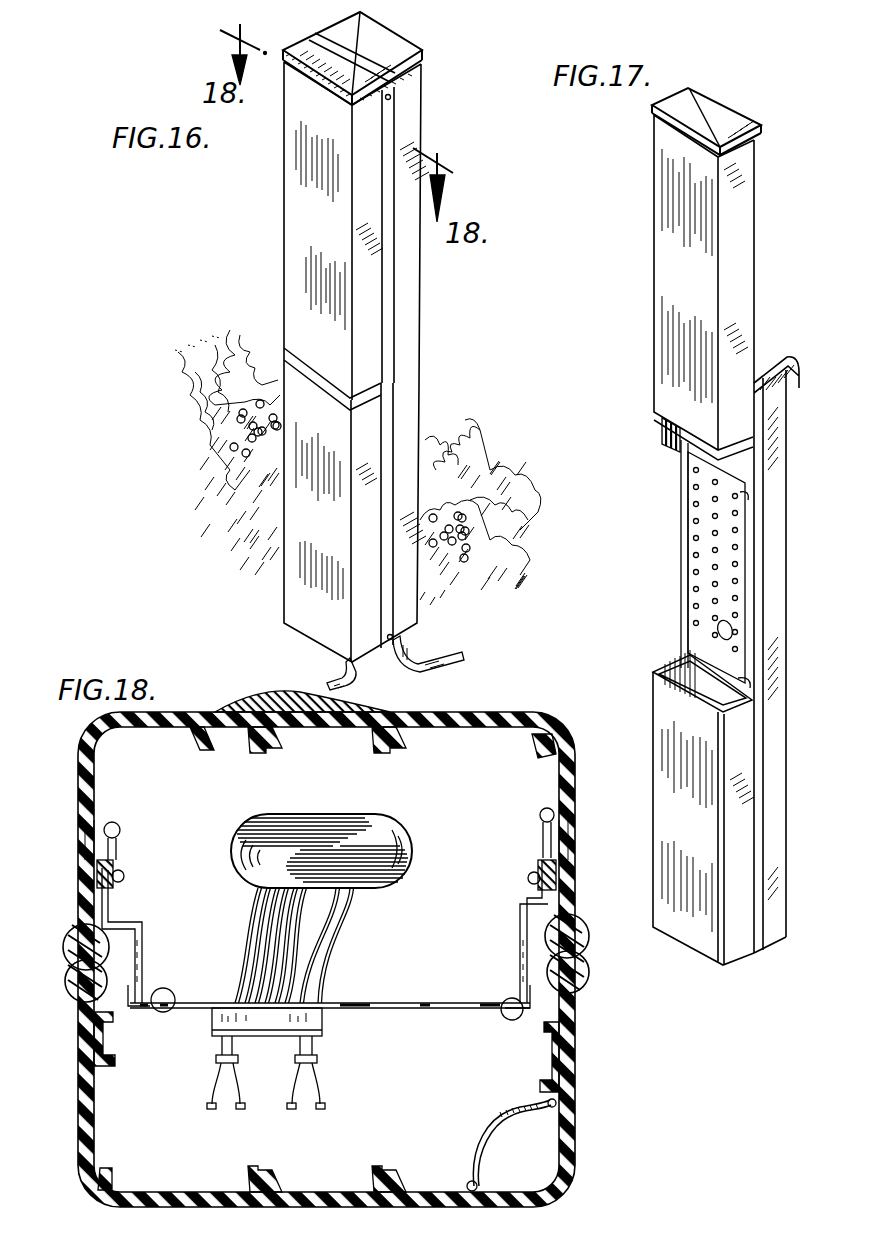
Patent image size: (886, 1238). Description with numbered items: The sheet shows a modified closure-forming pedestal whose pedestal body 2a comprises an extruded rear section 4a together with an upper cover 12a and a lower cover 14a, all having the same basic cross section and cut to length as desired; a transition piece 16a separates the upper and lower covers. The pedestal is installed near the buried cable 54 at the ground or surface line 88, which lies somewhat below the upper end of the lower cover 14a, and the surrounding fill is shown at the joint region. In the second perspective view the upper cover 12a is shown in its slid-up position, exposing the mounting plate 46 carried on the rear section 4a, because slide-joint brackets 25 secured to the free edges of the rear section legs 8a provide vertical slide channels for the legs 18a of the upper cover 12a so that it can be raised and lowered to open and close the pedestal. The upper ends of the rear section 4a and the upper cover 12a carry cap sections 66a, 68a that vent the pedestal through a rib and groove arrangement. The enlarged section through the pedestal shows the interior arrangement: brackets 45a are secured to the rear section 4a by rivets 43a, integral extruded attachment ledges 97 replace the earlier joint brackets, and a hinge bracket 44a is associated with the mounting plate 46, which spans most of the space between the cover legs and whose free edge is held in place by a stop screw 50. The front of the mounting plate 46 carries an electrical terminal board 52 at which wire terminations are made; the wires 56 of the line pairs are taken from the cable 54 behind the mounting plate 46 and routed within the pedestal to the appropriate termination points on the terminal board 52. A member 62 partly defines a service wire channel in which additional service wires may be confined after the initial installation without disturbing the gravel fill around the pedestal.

In FIG. 16, the pedestal body 2a is at (426, 312).
In FIG. 17, the rear section 4a is at (790, 378).
In FIG. 18, the rear section 4a is at (575, 1138).
In FIG. 18, the rear section legs 8a is at (80, 848).
In FIG. 16, the upper cover 12a is at (297, 257).
In FIG. 17, the upper cover 12a is at (740, 194).
In FIG. 16, the lower cover 14a is at (282, 597).
In FIG. 17, the lower cover 14a is at (735, 962).
In FIG. 16, the transition piece 16a is at (286, 360).
In FIG. 17, the transition piece 16a is at (663, 413).
In FIG. 18, the legs of the upper cover 18a is at (80, 1100).
In FIG. 18, the slide-joint brackets 25 is at (68, 962).
In FIG. 18, the rivets 43a is at (120, 880).
In FIG. 18, the hinge bracket 44a is at (517, 905).
In FIG. 18, the brackets 45a is at (142, 921).
In FIG. 17, the mounting plate 46 is at (688, 545).
In FIG. 18, the mounting plate 46 is at (407, 1010).
In FIG. 18, the stop screw 50 is at (163, 1013).
In FIG. 18, the terminal board 52 is at (270, 1024).
In FIG. 16, the cable 54 is at (455, 655).
In FIG. 18, the cable 54 is at (268, 778).
In FIG. 18, the wires 56 is at (258, 940).
In FIG. 18, the member 62 is at (466, 1170).
In FIG. 16, the cap section 66a is at (405, 42).
In FIG. 16, the cap section 68a is at (298, 52).
In FIG. 17, the cap section 68a is at (662, 128).
In FIG. 16, the ground or surface line 88 is at (427, 500).
In FIG. 18, the attachment ledges 97 is at (119, 845).